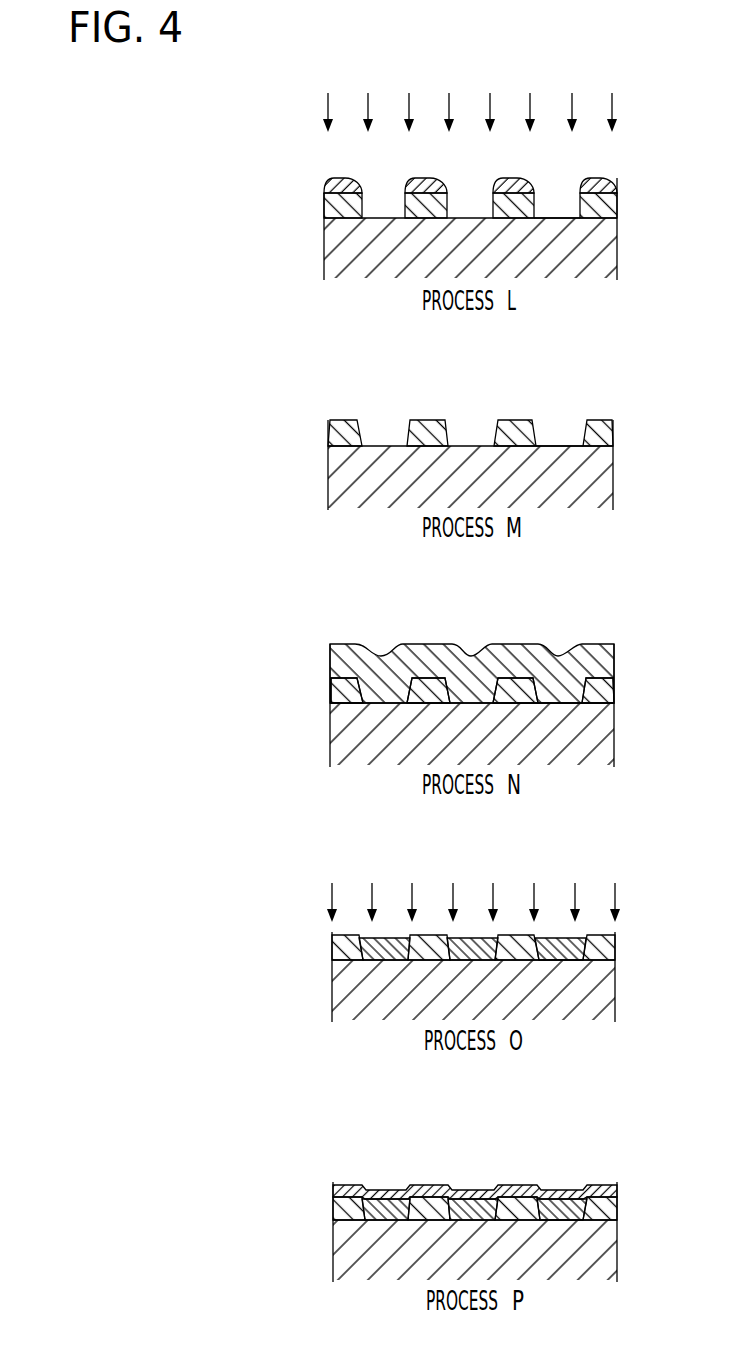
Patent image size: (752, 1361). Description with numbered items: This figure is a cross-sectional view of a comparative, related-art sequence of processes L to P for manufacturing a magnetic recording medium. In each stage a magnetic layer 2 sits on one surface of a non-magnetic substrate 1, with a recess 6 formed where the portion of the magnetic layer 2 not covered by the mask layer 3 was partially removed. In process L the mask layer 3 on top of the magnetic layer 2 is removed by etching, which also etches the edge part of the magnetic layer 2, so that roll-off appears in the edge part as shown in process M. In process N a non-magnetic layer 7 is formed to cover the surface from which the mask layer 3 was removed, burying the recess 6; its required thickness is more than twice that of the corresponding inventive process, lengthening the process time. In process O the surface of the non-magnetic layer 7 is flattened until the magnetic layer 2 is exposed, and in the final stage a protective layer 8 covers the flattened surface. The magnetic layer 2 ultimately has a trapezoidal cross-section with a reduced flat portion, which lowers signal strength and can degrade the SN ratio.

The non-magnetic substrate 1 is at (605, 247).
The magnetic layer 2 is at (607, 205).
The mask layer 3 is at (601, 186).
The recess 6 is at (558, 217).
The non-magnetic layer 7 is at (605, 657).
The protective layer 8 is at (600, 1186).